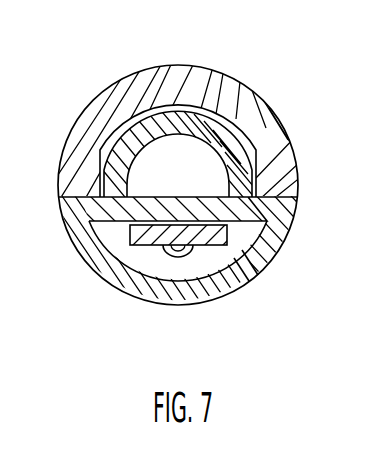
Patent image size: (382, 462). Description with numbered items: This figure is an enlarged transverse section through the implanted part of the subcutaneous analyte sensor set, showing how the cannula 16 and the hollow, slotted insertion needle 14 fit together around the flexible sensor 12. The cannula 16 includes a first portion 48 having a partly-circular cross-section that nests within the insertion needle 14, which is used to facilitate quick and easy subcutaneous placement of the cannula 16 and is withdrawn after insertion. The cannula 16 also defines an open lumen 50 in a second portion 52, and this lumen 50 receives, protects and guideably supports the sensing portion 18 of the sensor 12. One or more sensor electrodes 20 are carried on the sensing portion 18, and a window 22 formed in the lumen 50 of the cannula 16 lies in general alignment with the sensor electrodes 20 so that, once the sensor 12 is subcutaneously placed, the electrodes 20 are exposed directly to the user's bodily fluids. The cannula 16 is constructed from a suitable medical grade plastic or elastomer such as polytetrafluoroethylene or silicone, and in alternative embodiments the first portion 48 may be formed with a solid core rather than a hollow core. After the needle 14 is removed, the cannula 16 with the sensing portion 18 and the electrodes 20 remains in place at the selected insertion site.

The flexible sensor 12 is at (140, 248).
The insertion needle 14 is at (217, 82).
The cannula 16 is at (75, 247).
The sensing portion 18 is at (228, 236).
The sensor electrodes 20 is at (179, 258).
The window 22 is at (243, 268).
The first portion 48 is at (235, 160).
The open lumen 50 is at (212, 256).
The second portion 52 is at (261, 255).